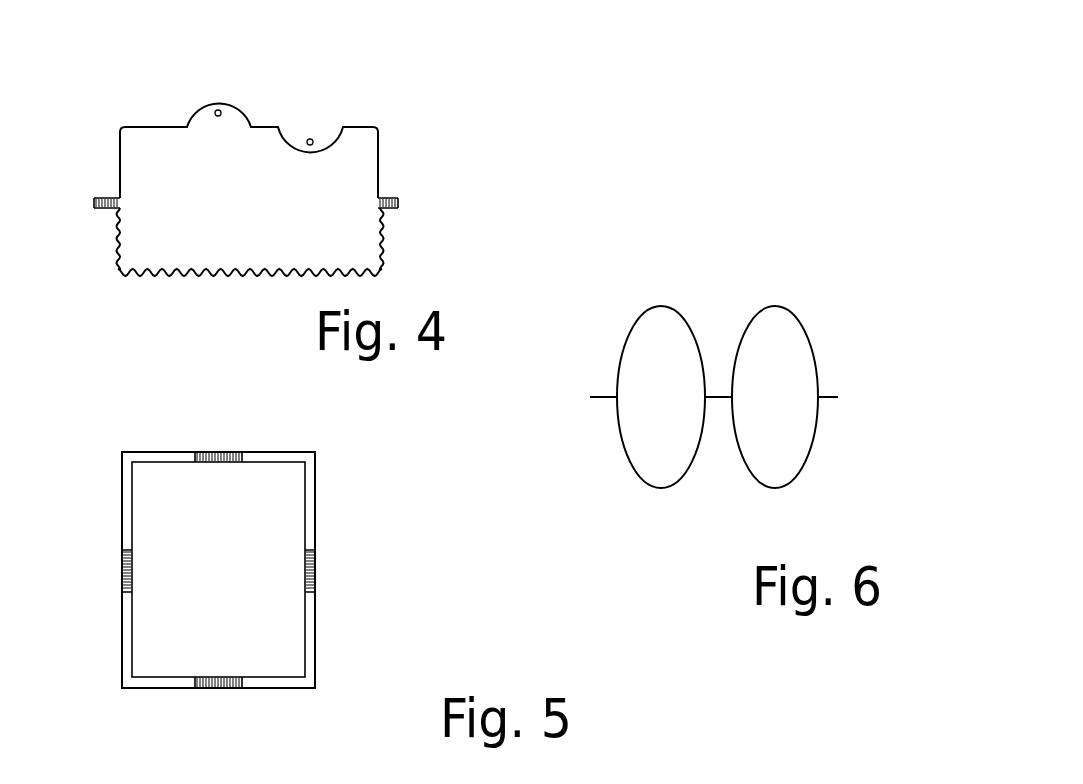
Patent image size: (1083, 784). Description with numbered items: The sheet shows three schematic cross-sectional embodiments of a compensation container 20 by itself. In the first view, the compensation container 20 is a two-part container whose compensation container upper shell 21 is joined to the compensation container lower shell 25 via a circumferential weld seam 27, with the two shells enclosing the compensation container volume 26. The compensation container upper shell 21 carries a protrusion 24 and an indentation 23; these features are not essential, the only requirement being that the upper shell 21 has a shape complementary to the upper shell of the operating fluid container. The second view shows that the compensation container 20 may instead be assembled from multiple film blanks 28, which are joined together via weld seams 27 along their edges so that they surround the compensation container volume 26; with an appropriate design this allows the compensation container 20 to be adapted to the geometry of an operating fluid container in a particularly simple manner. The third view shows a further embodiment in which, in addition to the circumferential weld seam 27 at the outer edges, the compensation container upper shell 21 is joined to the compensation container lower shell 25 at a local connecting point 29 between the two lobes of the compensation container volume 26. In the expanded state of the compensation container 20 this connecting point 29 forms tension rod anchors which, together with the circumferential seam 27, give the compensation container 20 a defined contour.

In FIG. 4, the compensation container 20 is at (445, 95).
In FIG. 5, the compensation container 20 is at (415, 645).
In FIG. 6, the compensation container 20 is at (842, 178).
In FIG. 4, the compensation container upper shell 21 is at (378, 165).
In FIG. 6, the compensation container upper shell 21 is at (642, 312).
In FIG. 4, the indentation 23 is at (311, 139).
In FIG. 4, the protrusion 24 is at (219, 110).
In FIG. 4, the compensation container lower shell 25 is at (135, 275).
In FIG. 6, the compensation container lower shell 25 is at (638, 478).
In FIG. 4, the compensation container volume 26 is at (213, 220).
In FIG. 5, the compensation container volume 26 is at (265, 516).
In FIG. 6, the compensation container volume 26 is at (672, 348).
In FIG. 4, the weld seam 27 is at (108, 198).
In FIG. 5, the weld seam 27 is at (227, 452).
In FIG. 6, the weld seam 27 is at (605, 397).
In FIG. 5, the film blank 28 is at (125, 517).
In FIG. 6, the connecting point 29 is at (712, 398).